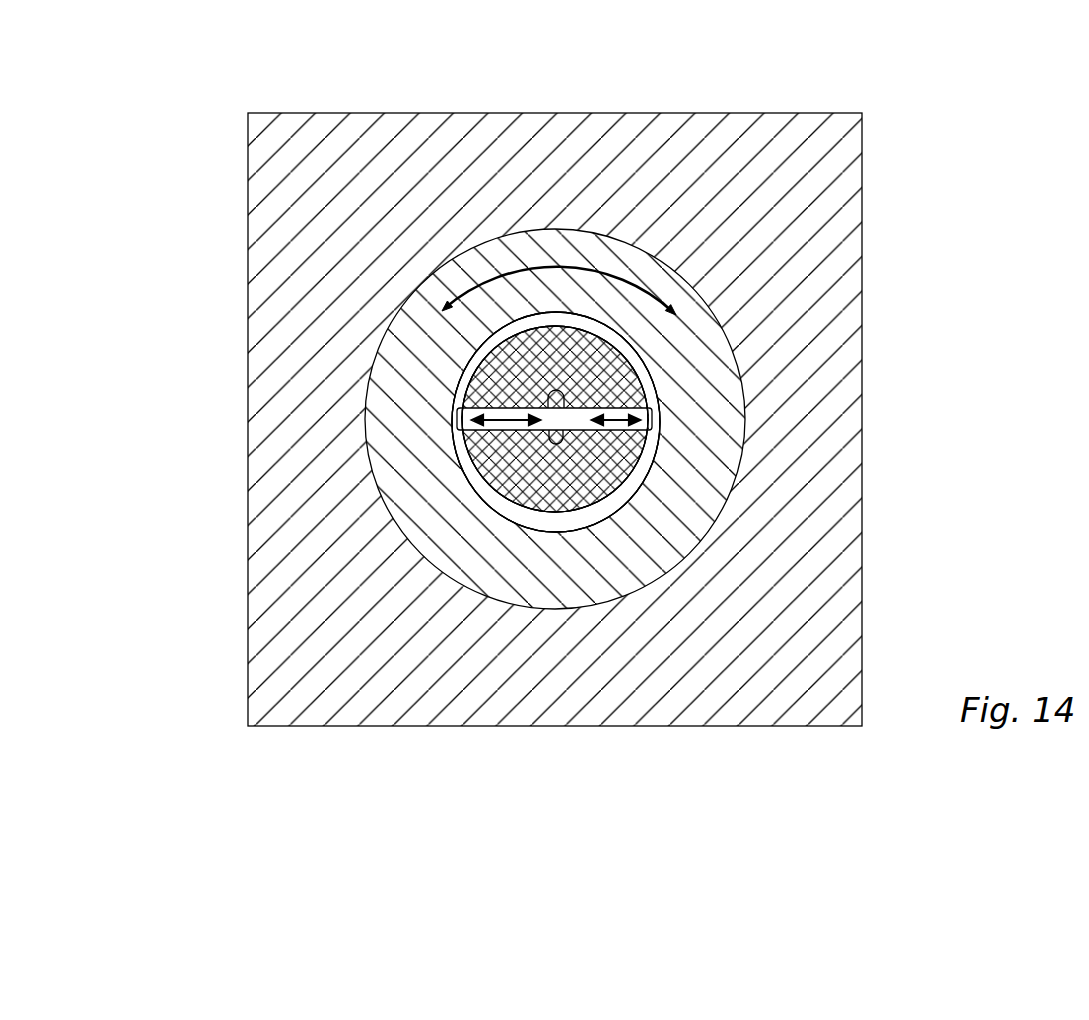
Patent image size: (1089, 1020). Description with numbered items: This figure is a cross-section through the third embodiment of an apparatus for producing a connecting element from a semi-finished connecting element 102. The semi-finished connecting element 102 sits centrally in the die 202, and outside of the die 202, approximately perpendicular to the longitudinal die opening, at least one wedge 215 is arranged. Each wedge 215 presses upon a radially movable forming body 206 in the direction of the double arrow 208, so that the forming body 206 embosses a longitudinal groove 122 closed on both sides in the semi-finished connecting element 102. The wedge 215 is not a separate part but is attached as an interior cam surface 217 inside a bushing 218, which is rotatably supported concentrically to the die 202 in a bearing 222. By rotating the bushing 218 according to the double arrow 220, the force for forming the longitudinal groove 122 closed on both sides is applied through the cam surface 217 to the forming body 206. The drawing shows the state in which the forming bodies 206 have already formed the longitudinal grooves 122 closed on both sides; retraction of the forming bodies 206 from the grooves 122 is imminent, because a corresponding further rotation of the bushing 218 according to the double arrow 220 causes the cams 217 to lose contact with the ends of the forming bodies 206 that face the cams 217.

The semi-finished connecting element 102 is at (582, 330).
The longitudinal groove 122 is at (457, 388).
The die 202 is at (535, 500).
The radially movable forming body 206 is at (507, 498).
The double arrow 208 is at (637, 440).
The wedge 215 is at (665, 418).
The interior cam surface 217 is at (657, 362).
The bushing 218 is at (717, 470).
The double arrow 220 is at (540, 265).
The bearing 222 is at (843, 568).